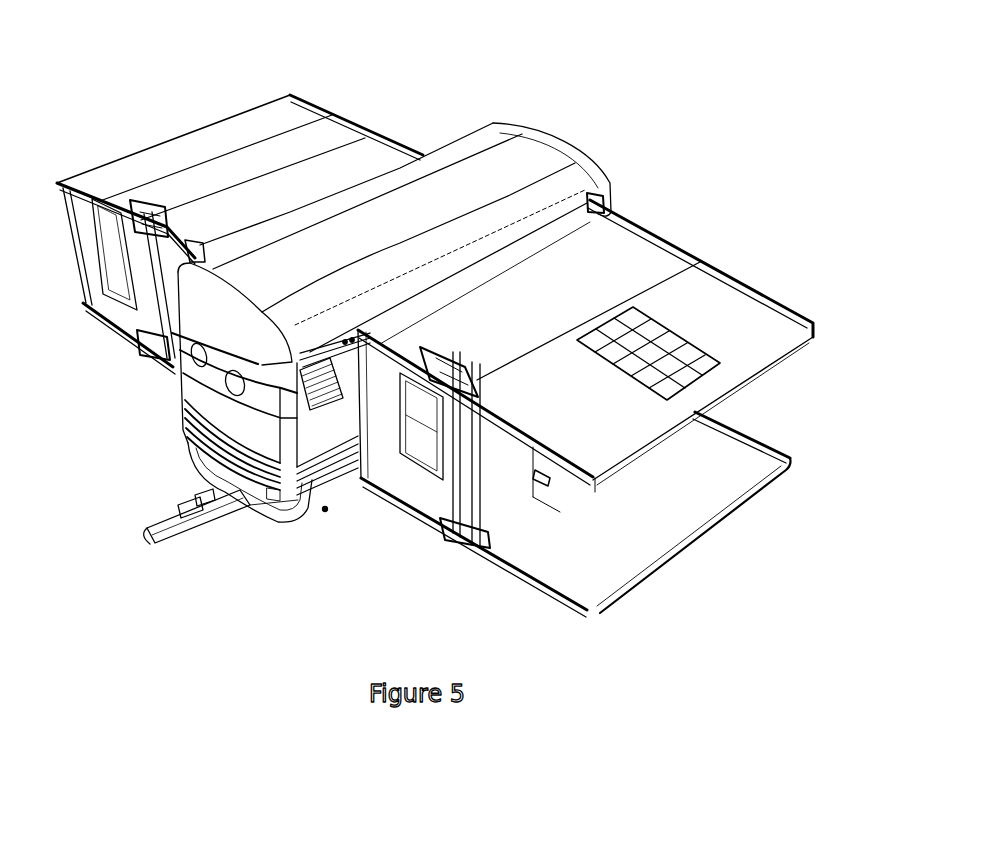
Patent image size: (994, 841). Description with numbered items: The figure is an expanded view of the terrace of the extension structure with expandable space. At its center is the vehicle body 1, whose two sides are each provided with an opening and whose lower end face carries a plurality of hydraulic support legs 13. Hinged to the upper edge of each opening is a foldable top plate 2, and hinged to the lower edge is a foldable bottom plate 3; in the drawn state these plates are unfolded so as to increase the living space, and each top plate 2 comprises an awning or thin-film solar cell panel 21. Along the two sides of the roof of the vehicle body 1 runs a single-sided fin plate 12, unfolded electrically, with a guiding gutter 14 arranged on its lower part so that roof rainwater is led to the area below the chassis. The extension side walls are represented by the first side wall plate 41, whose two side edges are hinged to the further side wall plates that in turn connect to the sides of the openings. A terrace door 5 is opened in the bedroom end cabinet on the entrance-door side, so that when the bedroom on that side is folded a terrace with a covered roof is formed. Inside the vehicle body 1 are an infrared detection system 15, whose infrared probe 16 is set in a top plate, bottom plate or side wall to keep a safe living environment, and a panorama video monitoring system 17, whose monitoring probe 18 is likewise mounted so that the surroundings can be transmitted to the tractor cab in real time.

The vehicle body 1 is at (507, 177).
The top plate 2 is at (357, 160).
The bottom plate 3 is at (673, 472).
The terrace door 5 is at (547, 477).
The single-sided fin plate 12 is at (472, 148).
The hydraulic support leg 13 is at (325, 509).
The guiding gutter 14 is at (290, 337).
The infrared detection system 15 is at (345, 346).
The infrared probe 16 is at (345, 342).
The panorama video monitoring system 17 is at (353, 344).
The monitoring probe 18 is at (352, 340).
The awning or thin-film solar cell panel 21 is at (287, 137).
The first side wall plate 41 is at (147, 293).